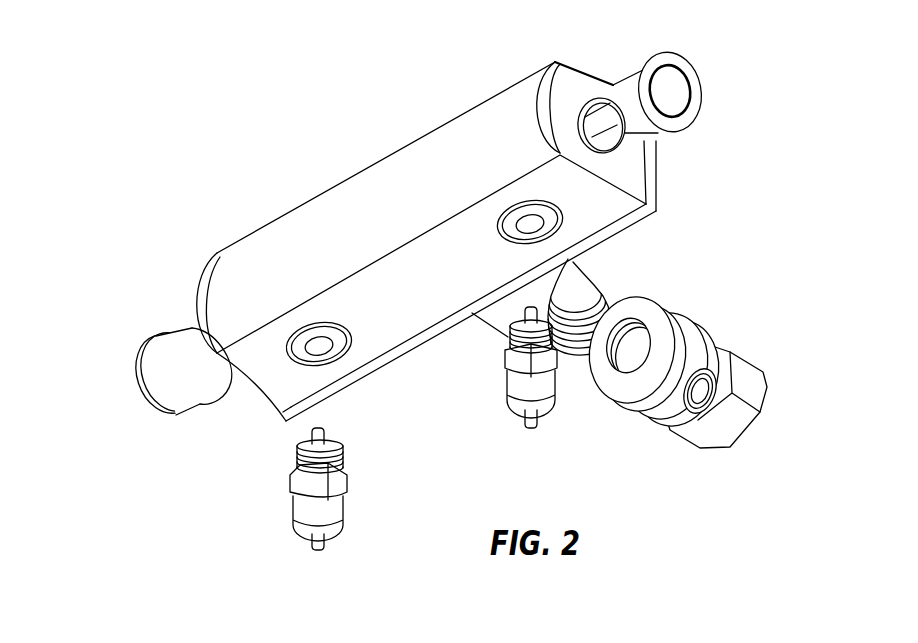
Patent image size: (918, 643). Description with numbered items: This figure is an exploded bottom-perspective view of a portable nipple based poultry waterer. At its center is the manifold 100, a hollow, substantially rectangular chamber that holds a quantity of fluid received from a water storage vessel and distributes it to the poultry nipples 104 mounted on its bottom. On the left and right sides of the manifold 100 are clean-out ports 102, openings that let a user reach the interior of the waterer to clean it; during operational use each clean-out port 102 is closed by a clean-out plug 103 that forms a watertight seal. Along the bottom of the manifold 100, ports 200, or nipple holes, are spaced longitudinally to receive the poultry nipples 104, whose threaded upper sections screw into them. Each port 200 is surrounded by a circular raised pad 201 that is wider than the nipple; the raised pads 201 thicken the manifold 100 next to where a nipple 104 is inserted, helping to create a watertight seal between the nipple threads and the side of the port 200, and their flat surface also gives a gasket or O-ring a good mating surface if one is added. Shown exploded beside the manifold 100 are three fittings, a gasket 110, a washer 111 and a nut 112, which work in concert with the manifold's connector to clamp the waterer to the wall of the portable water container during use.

The manifold 100 is at (309, 200).
The clean-out port 102 is at (589, 108).
The clean-out plug 103 is at (141, 381).
The poultry nipple 104 is at (507, 366).
The gasket 110 is at (658, 298).
The washer 111 is at (699, 319).
The nut 112 is at (745, 356).
The port 200 is at (320, 356).
The raised pad 201 is at (303, 356).